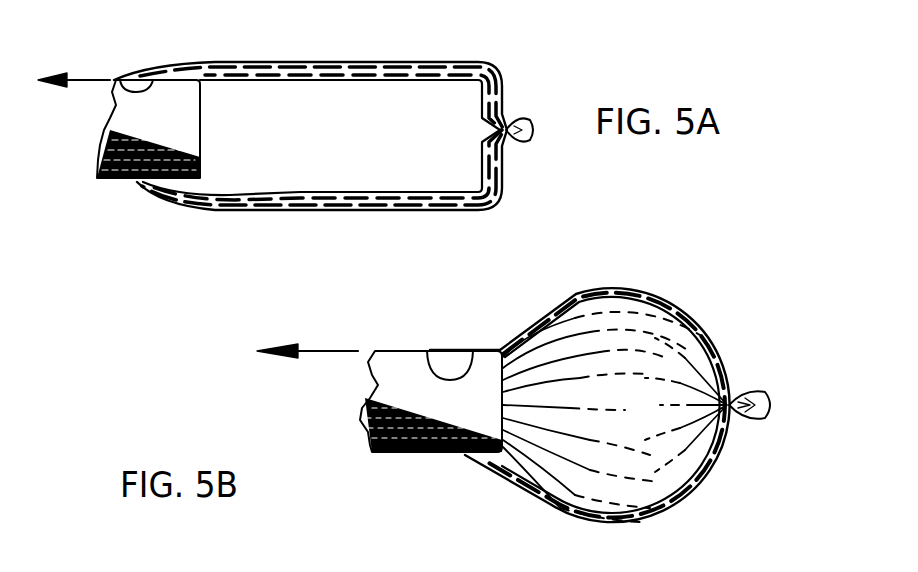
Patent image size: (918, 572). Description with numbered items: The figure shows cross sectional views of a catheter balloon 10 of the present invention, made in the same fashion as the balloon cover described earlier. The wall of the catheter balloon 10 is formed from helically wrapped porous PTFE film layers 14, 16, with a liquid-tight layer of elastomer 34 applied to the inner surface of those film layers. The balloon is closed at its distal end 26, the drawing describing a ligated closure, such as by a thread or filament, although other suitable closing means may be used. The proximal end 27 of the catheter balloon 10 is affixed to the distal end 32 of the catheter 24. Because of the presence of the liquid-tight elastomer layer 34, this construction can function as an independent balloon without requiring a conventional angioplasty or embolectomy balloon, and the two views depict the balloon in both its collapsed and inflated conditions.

In FIG. 5A, the catheter balloon 10 is at (197, 57).
In FIG. 5B, the catheter balloon 10 is at (564, 291).
In FIG. 5A, the helically wrapped porous PTFE film layer 14 is at (290, 61).
In FIG. 5B, the helically wrapped porous PTFE film layer 14 is at (630, 290).
In FIG. 5A, the helically wrapped porous PTFE film layer 16 is at (321, 137).
In FIG. 5B, the helically wrapped porous PTFE film layer 16 is at (611, 405).
In FIG. 5A, the catheter 24 is at (117, 182).
In FIG. 5B, the catheter 24 is at (395, 350).
In FIG. 5A, the distal end 26 is at (510, 125).
In FIG. 5B, the distal end 26 is at (745, 398).
In FIG. 5A, the proximal end 27 is at (84, 78).
In FIG. 5B, the proximal end 27 is at (318, 353).
In FIG. 5A, the distal end of catheter 32 is at (118, 80).
In FIG. 5B, the distal end of catheter 32 is at (427, 352).
In FIG. 5A, the liquid-tight layer of elastomer 34 is at (450, 62).
In FIG. 5B, the liquid-tight layer of elastomer 34 is at (540, 490).